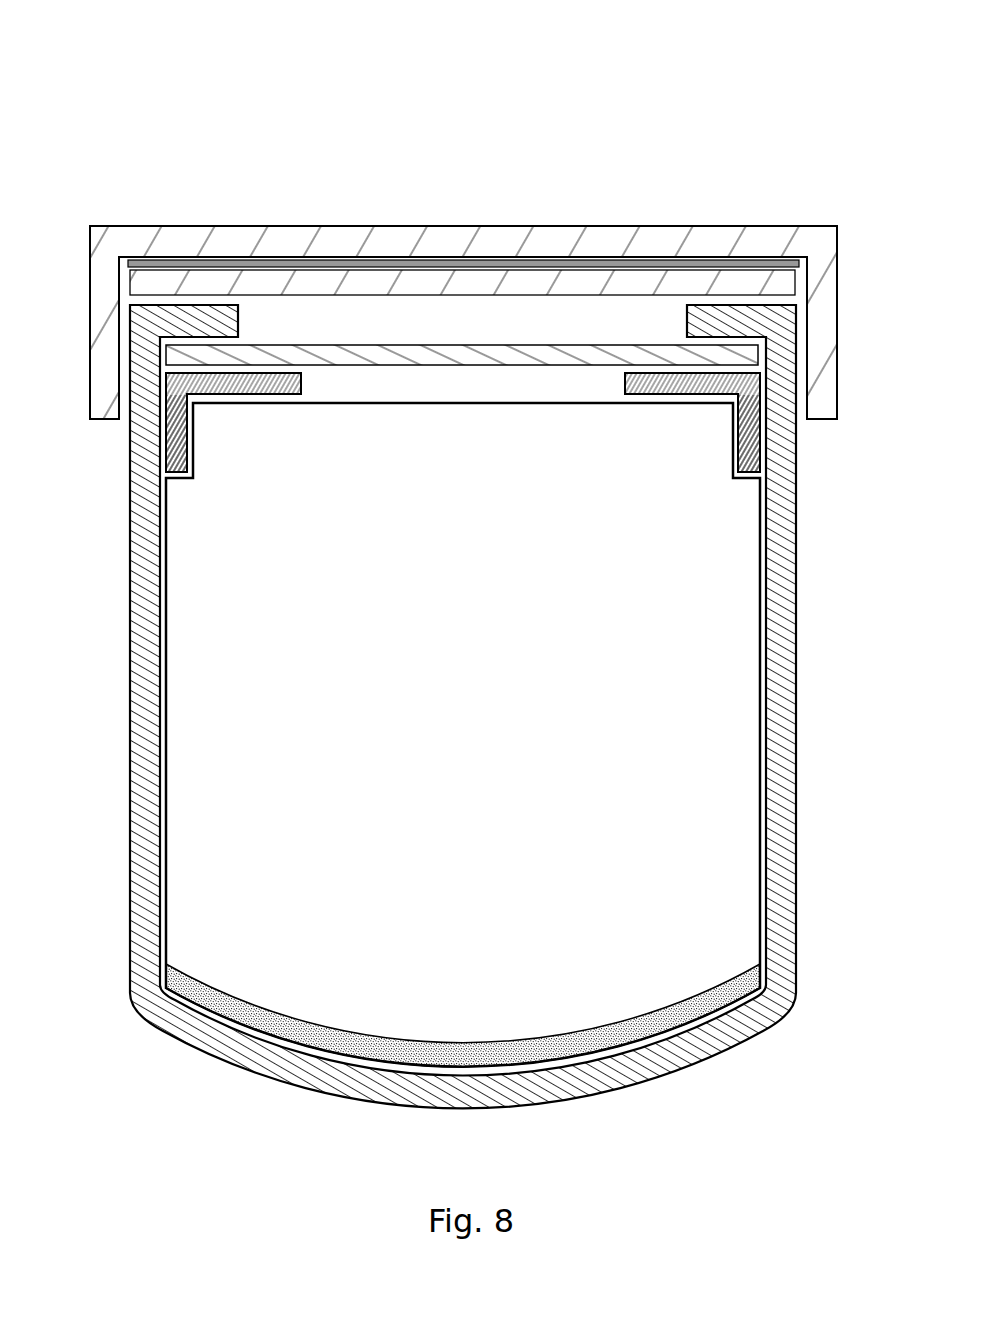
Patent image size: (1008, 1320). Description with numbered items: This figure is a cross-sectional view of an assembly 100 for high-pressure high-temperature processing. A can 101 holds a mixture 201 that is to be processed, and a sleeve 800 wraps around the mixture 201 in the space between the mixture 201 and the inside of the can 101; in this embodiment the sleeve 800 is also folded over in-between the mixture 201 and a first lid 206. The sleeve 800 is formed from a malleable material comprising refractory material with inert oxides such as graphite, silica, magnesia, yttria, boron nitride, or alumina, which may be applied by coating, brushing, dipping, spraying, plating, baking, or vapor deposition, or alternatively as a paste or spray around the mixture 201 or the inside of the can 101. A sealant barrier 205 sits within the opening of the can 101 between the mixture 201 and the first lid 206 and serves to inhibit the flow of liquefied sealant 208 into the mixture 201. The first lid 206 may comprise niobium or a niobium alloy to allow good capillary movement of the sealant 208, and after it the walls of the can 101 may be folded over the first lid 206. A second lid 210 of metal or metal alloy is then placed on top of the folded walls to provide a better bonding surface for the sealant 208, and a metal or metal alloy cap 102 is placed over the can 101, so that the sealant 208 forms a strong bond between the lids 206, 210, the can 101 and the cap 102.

The assembly 100 is at (166, 88).
The can 101 is at (782, 668).
The cap 102 is at (684, 244).
The mixture 201 is at (218, 678).
The sealant barrier 205 is at (157, 442).
The first lid 206 is at (533, 353).
The sealant 208 is at (745, 265).
The second lid 210 is at (622, 282).
The sleeve 800 is at (267, 383).